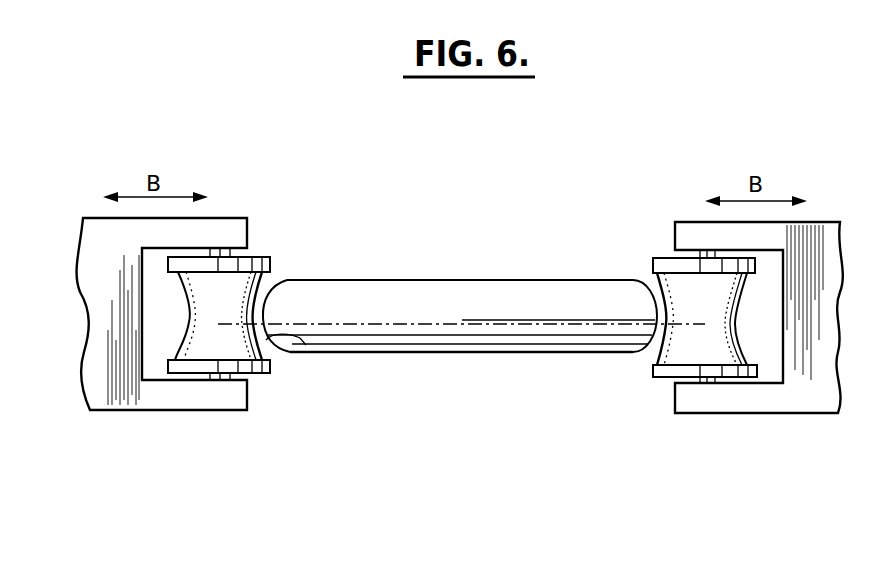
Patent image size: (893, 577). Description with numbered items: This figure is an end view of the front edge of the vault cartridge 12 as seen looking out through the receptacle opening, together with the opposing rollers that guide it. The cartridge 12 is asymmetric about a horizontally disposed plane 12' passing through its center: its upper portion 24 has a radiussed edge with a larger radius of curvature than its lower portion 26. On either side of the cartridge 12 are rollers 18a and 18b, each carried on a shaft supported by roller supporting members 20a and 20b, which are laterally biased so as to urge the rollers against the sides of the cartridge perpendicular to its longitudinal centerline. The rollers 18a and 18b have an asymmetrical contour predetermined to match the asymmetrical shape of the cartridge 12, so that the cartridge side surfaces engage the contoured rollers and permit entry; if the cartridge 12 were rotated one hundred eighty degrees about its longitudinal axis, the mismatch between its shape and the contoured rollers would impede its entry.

The vault cartridge 12 is at (461, 293).
The horizontally disposed plane 12' is at (558, 278).
The roller 18a is at (268, 352).
The roller 18b is at (662, 349).
The roller supporting member 20a is at (178, 411).
The roller supporting member 20b is at (760, 413).
The upper portion 24 is at (278, 280).
The lower portion 26 is at (298, 348).